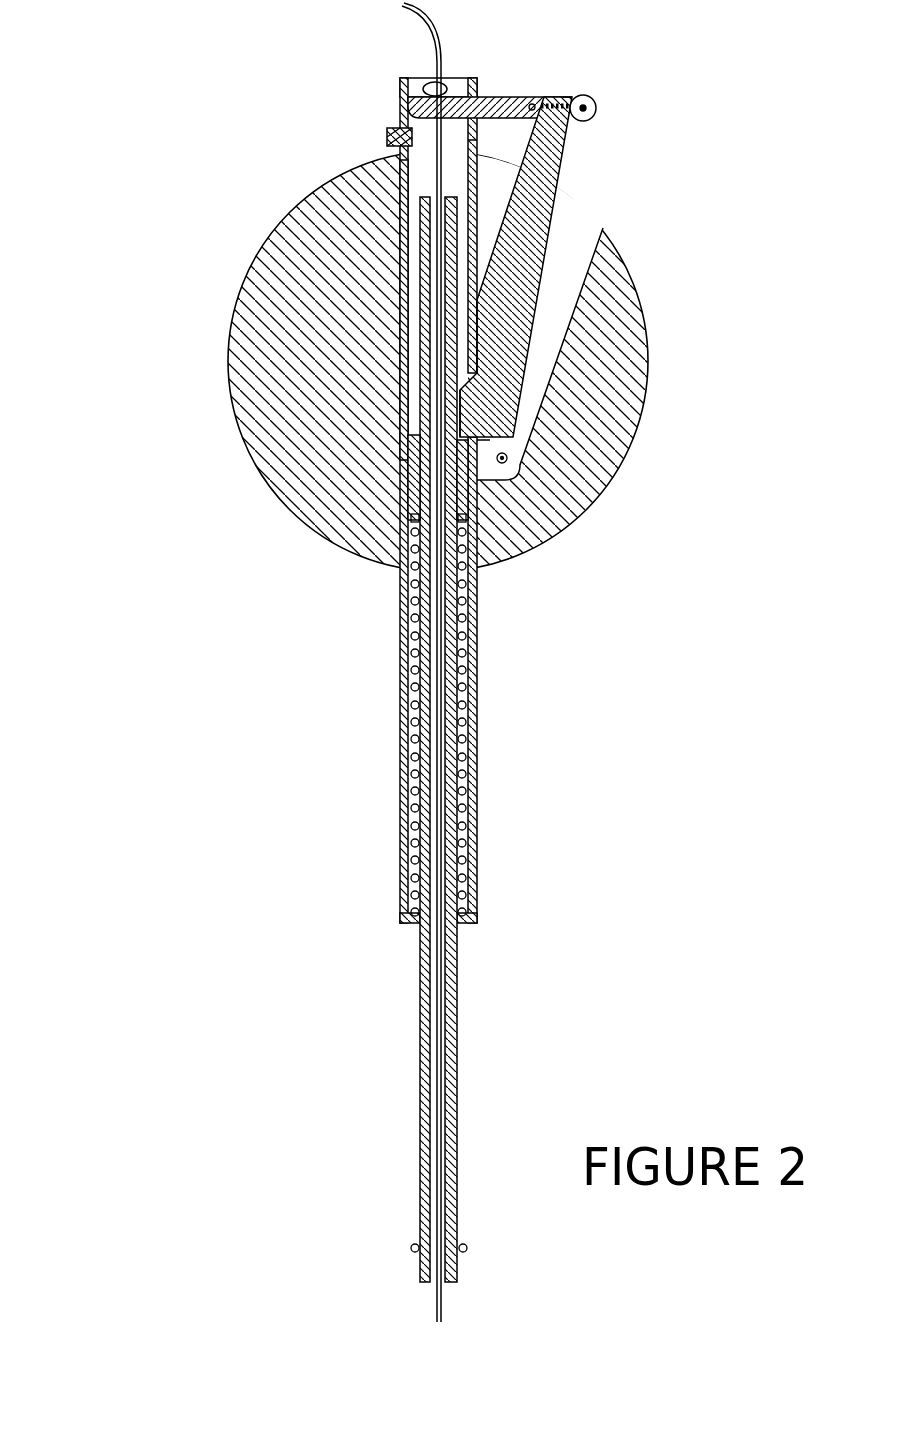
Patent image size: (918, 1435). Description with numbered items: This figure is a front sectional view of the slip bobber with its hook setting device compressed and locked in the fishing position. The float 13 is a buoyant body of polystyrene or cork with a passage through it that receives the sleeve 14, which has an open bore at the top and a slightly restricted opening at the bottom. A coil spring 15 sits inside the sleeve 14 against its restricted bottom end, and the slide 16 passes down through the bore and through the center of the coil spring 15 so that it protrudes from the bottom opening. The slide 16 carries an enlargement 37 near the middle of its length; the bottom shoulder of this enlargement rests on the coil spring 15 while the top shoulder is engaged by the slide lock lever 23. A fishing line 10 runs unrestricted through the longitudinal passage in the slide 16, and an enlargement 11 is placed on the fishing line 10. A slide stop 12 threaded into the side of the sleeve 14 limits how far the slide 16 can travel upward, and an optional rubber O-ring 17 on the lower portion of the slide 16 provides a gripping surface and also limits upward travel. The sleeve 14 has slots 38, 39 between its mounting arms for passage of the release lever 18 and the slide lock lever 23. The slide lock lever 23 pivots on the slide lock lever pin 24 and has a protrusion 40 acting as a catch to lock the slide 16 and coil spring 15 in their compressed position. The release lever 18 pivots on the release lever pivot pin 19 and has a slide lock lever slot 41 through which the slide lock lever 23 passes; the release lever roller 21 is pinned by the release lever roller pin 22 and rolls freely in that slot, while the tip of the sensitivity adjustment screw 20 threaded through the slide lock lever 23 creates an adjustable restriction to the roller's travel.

The fishing line 10 is at (408, 19).
The enlargement placed on fishing line 11 is at (421, 78).
The slide stop 12 is at (387, 135).
The float 13 is at (318, 330).
The sleeve 14 is at (400, 273).
The coil spring 15 is at (412, 614).
The slide 16 is at (425, 952).
The rubber O-ring 17 is at (411, 1248).
The release lever 18 is at (488, 107).
The release lever pivot pin 19 is at (533, 104).
The sensitivity adjustment screw 20 is at (566, 98).
The release lever roller 21 is at (586, 108).
The release lever roller pin 22 is at (590, 120).
The slide lock lever 23 is at (517, 250).
The slide lock lever pin 24 is at (507, 458).
The enlargement 37 is at (410, 480).
The slot 38 is at (470, 142).
The slot 39 is at (477, 350).
The protrusion 40 is at (466, 418).
The slide lock lever slot 41 is at (542, 104).